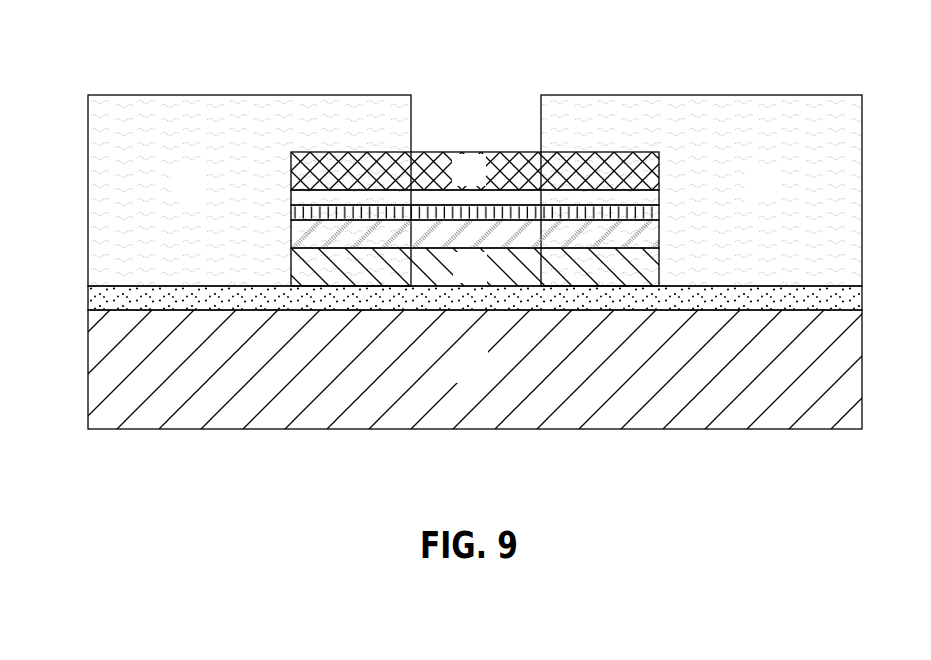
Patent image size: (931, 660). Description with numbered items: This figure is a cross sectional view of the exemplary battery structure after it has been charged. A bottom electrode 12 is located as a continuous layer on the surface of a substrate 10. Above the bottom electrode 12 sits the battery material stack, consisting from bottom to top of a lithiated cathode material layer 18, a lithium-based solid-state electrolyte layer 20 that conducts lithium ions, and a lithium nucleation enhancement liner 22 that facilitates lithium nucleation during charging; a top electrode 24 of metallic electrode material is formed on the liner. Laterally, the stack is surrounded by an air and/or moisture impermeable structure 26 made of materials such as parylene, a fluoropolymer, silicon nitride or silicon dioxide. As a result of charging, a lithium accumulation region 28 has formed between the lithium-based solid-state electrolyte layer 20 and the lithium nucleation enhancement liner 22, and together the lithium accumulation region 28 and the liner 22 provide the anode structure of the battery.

The substrate 10 is at (455, 380).
The bottom electrode 12 is at (98, 301).
The lithiated cathode material layer 18 is at (484, 280).
The lithium-based solid-state electrolyte layer 20 is at (560, 230).
The lithium nucleation enhancement liner 22 is at (360, 195).
The top electrode 24 is at (455, 183).
The air and/or moisture impermeable structure 26 is at (173, 198).
The lithium accumulation region 28 is at (398, 208).